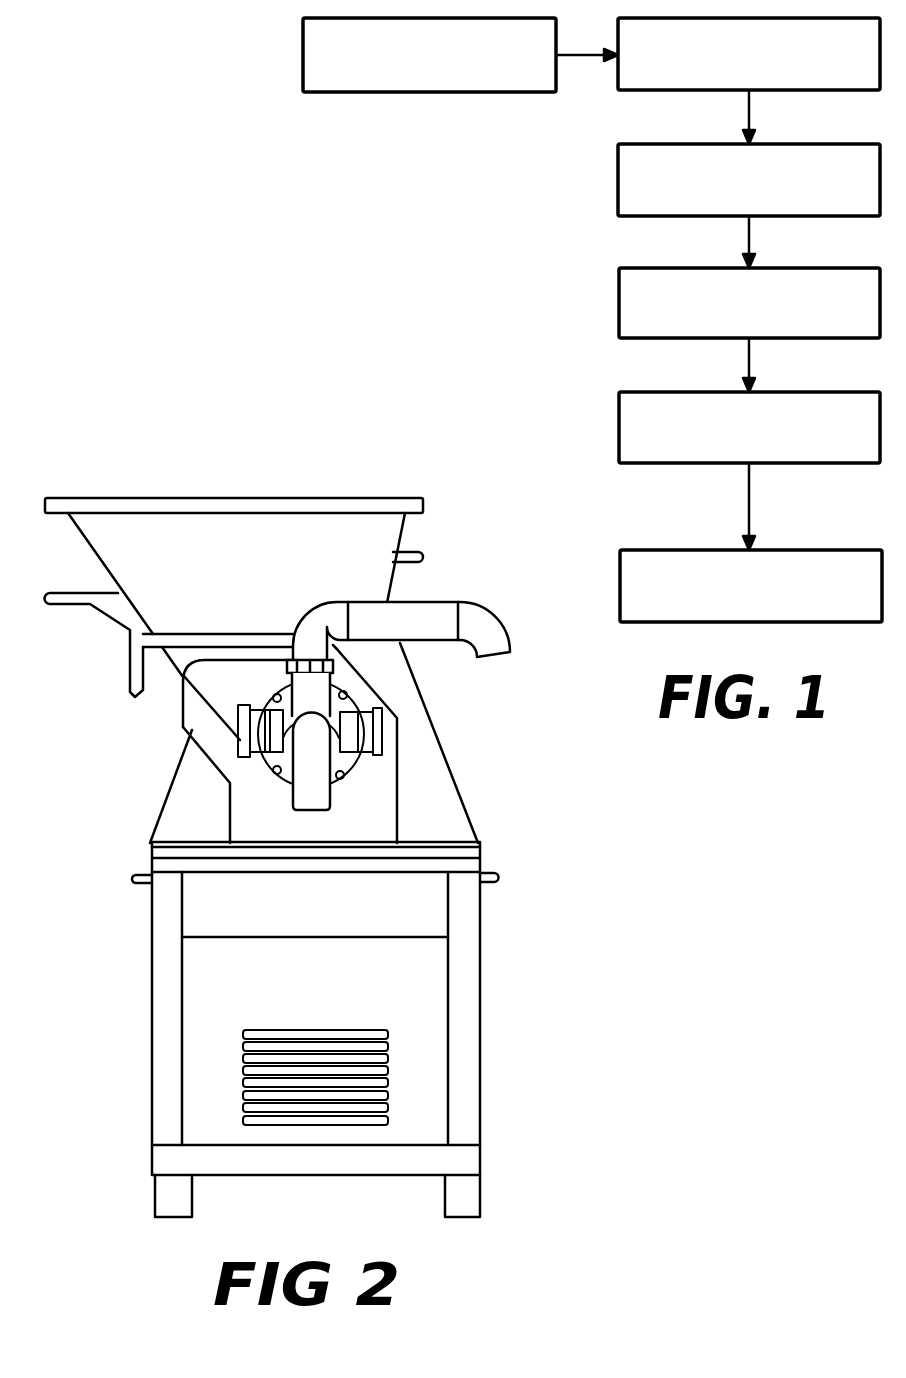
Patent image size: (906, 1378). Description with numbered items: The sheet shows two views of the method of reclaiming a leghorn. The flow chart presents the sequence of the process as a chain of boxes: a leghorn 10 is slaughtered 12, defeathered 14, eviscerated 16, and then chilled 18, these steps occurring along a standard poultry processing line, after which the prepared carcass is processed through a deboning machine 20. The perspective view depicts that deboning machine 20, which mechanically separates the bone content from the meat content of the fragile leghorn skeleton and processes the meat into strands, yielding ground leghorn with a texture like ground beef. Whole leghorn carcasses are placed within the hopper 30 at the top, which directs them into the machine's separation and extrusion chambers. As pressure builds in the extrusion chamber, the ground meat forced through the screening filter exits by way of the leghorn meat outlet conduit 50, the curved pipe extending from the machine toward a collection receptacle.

In FIG. 1, the leghorn 10 is at (429, 55).
In FIG. 1, the slaughtered 12 is at (749, 54).
In FIG. 1, the defeathered 14 is at (749, 180).
In FIG. 1, the eviscerated 16 is at (749, 303).
In FIG. 1, the chilled 18 is at (749, 427).
In FIG. 1, the deboning machine 20 is at (751, 586).
In FIG. 2, the deboning machine 20 is at (278, 819).
In FIG. 2, the hopper 30 is at (317, 530).
In FIG. 2, the leghorn meat outlet conduit 50 is at (437, 612).